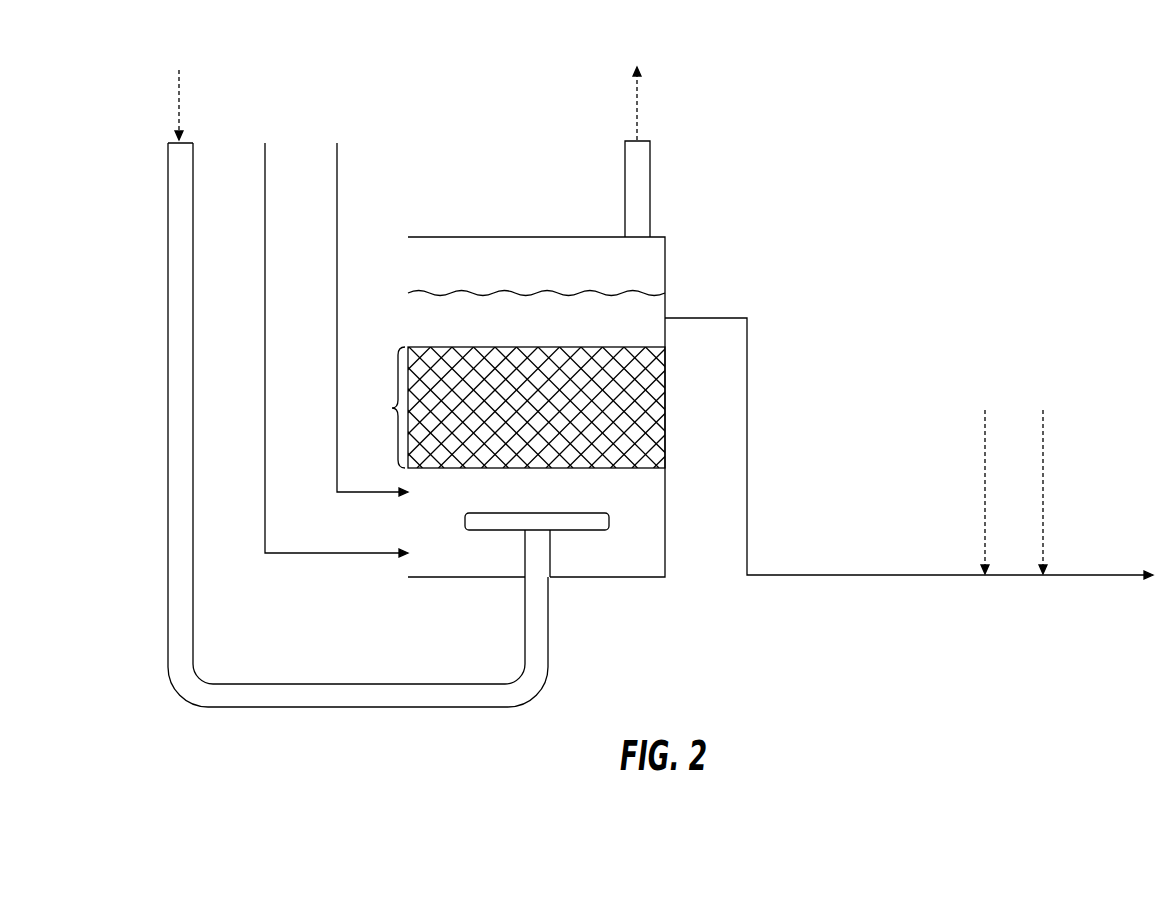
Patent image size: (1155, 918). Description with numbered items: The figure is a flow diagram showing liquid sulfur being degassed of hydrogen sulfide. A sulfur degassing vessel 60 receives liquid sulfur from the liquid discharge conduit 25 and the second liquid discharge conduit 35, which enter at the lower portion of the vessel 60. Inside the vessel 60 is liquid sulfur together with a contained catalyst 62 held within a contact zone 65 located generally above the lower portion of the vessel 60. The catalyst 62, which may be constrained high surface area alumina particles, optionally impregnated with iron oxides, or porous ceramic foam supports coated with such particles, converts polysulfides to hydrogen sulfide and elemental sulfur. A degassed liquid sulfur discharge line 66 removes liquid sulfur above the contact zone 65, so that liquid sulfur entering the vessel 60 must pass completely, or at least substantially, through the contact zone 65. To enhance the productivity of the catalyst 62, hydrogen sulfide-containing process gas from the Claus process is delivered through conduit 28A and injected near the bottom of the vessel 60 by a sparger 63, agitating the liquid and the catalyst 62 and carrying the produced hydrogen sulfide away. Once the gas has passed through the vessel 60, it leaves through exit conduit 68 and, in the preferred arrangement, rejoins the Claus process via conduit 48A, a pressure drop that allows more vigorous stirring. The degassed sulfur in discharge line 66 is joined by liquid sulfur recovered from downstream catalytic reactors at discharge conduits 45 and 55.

The conduit 28A is at (179, 102).
The liquid discharge conduit 25 is at (265, 210).
The second liquid discharge conduit 35 is at (337, 209).
The conduit 48A is at (637, 100).
The exit conduit 68 is at (625, 233).
The sulfur degassing vessel 60 is at (665, 270).
The catalyst 62 is at (636, 409).
The contact zone 65 is at (381, 407).
The sparger 63 is at (537, 513).
The degassed liquid sulfur discharge line 66 is at (748, 453).
The discharge conduit 45 is at (984, 494).
The discharge conduit 55 is at (1043, 494).